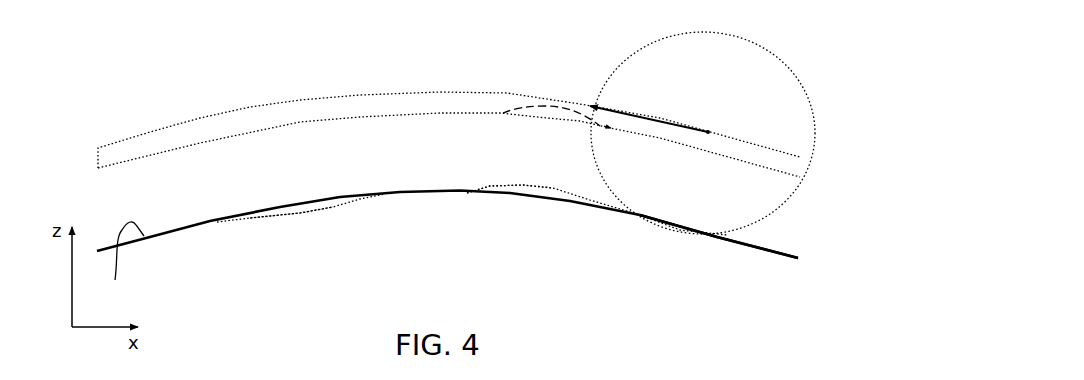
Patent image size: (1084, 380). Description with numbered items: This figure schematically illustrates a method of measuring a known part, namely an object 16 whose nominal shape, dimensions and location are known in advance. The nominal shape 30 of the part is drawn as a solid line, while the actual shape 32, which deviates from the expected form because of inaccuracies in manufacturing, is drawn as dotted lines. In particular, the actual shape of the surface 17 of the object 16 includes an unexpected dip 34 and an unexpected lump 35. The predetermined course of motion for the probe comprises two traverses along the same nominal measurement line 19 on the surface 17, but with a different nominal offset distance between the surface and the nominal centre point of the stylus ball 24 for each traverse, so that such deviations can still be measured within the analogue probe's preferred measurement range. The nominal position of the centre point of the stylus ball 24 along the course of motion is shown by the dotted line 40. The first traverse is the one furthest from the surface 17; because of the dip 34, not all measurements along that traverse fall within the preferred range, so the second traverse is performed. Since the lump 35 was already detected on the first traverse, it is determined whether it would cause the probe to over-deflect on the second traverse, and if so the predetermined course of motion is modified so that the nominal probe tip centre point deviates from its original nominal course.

The object 16 is at (466, 210).
The surface 17 is at (123, 265).
The nominal measurement line 19 is at (779, 242).
The stylus ball 24 is at (757, 44).
The nominal shape 30 is at (188, 222).
The actual shape 32 is at (305, 213).
The dip 34 is at (263, 236).
The lump 35 is at (488, 187).
The nominal position of the stylus ball's centre point 40 is at (258, 108).